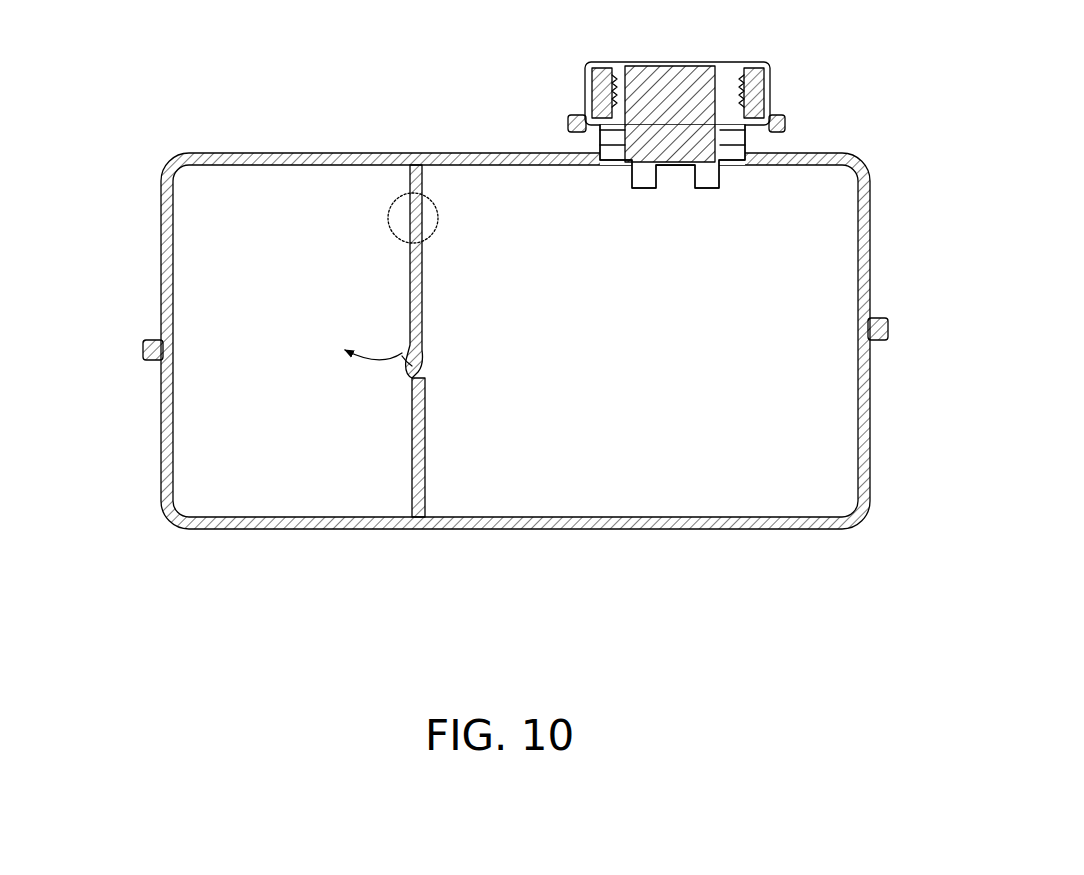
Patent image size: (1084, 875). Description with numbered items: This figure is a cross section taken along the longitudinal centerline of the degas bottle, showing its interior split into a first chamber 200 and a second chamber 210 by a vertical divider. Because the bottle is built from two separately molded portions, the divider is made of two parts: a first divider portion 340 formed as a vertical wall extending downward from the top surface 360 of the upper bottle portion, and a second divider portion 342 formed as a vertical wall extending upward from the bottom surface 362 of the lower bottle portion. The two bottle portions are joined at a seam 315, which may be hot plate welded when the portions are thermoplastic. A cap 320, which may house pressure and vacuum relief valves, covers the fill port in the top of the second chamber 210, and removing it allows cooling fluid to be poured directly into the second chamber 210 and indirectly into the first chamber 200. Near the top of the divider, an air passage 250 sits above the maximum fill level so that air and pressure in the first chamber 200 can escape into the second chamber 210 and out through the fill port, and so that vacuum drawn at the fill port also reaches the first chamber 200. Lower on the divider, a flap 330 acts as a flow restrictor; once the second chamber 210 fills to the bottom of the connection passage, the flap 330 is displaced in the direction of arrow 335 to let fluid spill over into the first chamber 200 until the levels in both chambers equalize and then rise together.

The first chamber 200 is at (232, 195).
The second chamber 210 is at (736, 492).
The air passage 250 is at (404, 214).
The seam 315 is at (156, 350).
The cap 320 is at (703, 88).
The flap 330 is at (410, 358).
The arrow 335 is at (361, 357).
The first divider portion 340 is at (413, 205).
The second divider portion 342 is at (420, 455).
The top surface 360 is at (483, 163).
The bottom surface 362 is at (172, 235).